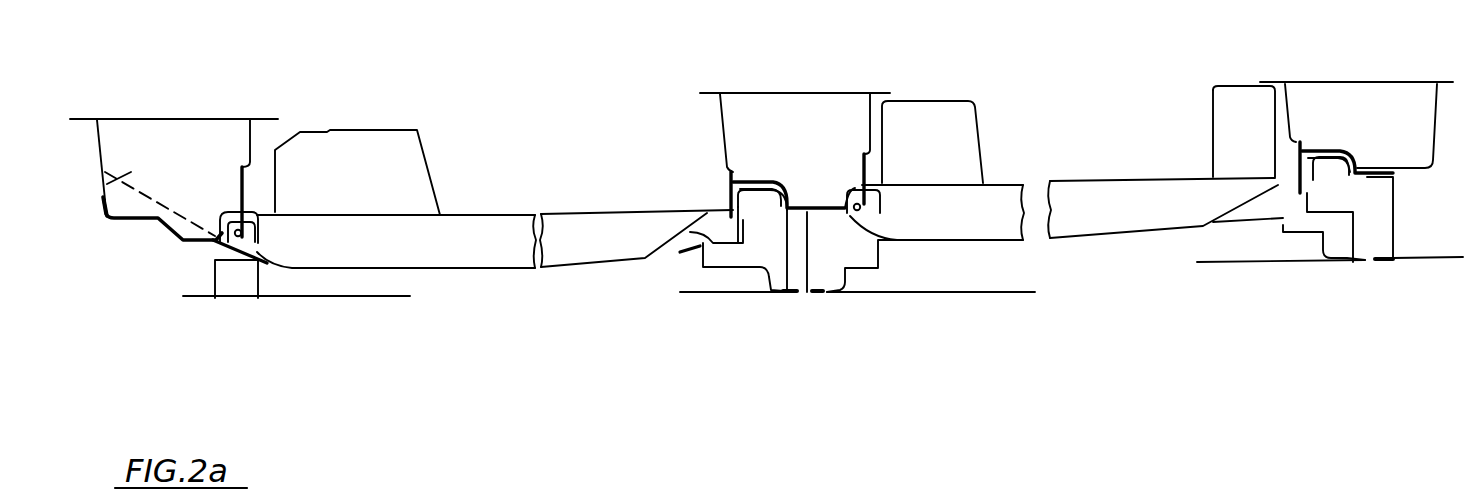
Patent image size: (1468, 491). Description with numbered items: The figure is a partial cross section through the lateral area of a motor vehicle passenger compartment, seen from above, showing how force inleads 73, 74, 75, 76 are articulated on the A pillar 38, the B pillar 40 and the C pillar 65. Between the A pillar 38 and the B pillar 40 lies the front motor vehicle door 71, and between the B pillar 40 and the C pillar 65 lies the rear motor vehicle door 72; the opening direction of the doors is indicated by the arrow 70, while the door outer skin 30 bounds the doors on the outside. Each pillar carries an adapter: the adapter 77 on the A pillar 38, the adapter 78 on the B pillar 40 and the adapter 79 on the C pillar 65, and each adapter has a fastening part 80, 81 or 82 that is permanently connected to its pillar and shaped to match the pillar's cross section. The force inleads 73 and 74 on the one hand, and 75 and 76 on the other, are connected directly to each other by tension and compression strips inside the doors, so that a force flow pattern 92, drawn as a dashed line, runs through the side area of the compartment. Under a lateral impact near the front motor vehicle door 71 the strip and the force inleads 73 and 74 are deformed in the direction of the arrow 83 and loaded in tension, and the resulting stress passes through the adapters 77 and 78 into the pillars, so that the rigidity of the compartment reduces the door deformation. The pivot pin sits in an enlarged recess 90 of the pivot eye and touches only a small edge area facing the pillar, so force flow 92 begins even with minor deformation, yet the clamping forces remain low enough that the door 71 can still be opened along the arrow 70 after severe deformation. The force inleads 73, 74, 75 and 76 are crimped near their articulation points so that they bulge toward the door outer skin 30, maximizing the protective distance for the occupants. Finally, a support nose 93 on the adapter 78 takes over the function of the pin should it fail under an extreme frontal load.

The door outer skin 30 is at (373, 295).
The A pillar 38 is at (160, 143).
The B pillar 40 is at (788, 113).
The C pillar 65 is at (1322, 98).
The arrow 70 is at (697, 330).
The front motor vehicle door 71 is at (345, 278).
The rear motor vehicle door 72 is at (923, 287).
The force inlead 73 is at (425, 245).
The force inlead 74 is at (650, 230).
The force inlead 75 is at (993, 213).
The force inlead 76 is at (1192, 207).
The adapter 77 is at (181, 200).
The adapter 78 is at (796, 176).
The adapter 79 is at (1371, 157).
The fastening part 80 is at (160, 230).
The fastening part 81 is at (808, 270).
The fastening part 82 is at (1370, 177).
The arrow 83 is at (513, 326).
The recess 90 is at (258, 258).
The force flow pattern 92 is at (107, 200).
The support nose 93 is at (785, 294).